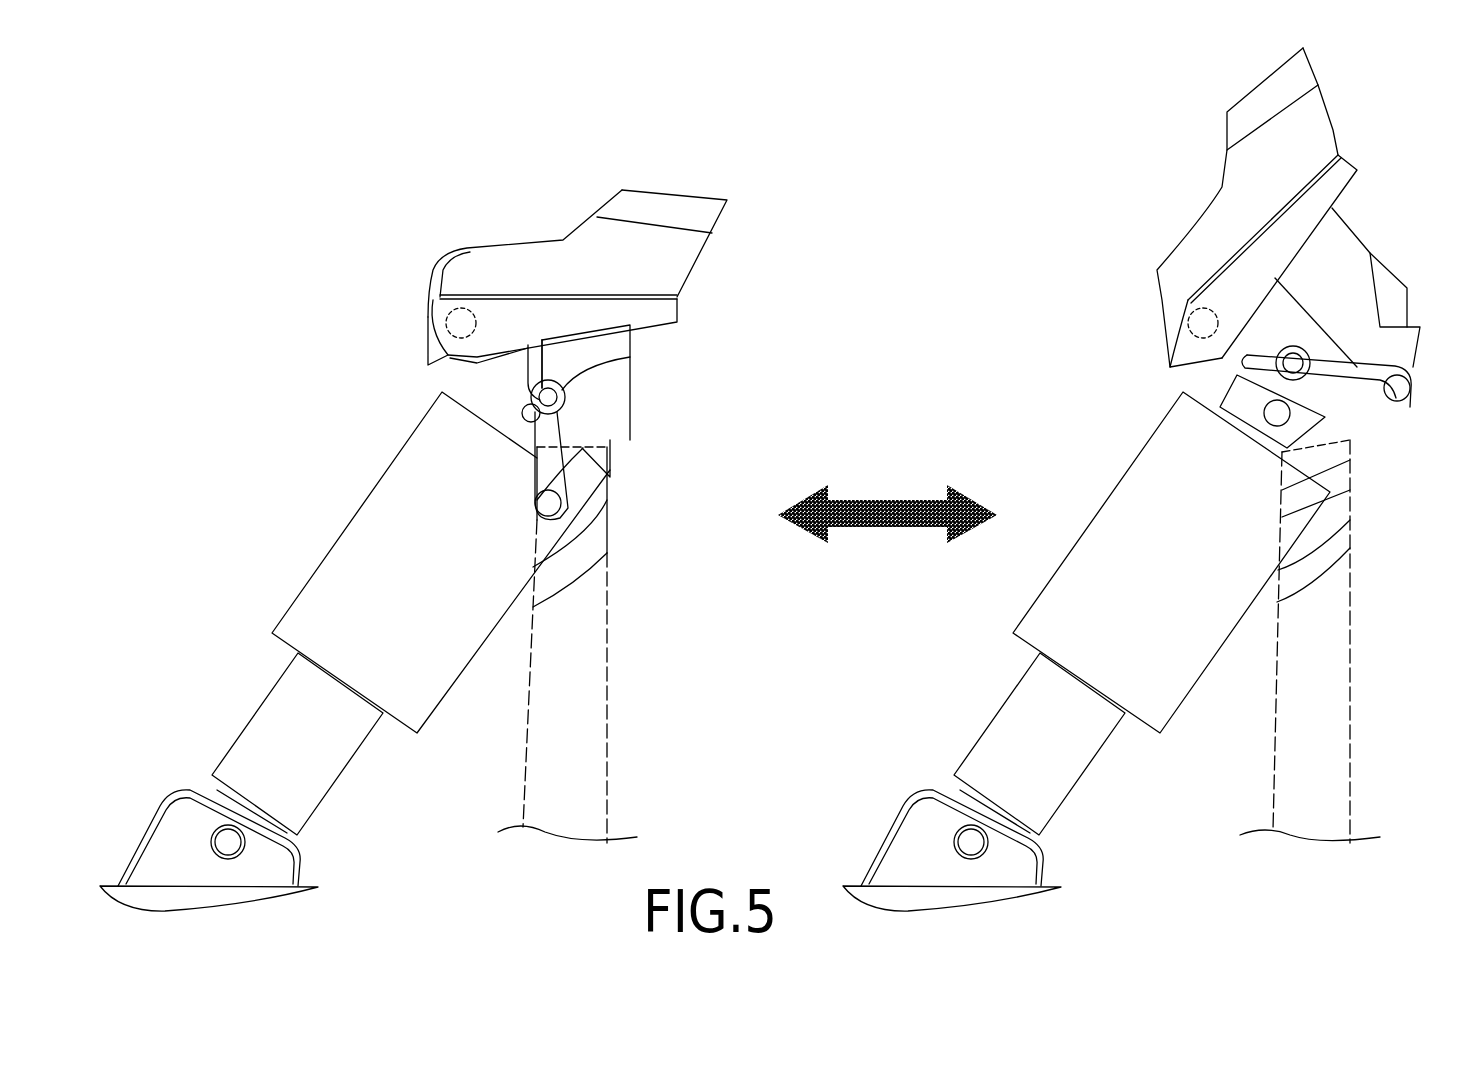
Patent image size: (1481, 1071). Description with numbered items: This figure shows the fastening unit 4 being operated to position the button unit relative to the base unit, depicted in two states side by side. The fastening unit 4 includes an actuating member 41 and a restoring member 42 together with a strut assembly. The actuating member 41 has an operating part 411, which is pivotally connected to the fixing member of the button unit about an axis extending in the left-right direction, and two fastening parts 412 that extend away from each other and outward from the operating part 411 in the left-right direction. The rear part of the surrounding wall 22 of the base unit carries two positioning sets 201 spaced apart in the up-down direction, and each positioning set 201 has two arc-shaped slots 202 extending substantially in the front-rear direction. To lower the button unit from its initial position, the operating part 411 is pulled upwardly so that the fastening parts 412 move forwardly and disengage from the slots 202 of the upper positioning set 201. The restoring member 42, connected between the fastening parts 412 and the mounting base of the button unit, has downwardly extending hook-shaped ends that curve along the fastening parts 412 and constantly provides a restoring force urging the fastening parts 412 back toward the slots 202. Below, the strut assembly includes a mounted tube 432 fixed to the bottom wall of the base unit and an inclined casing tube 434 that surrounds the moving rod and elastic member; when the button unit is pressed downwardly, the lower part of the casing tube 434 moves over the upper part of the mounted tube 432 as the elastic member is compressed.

The fastening unit 4 is at (786, 479).
The actuating member 41 is at (698, 260).
The operating part 411 is at (702, 210).
The restoring member 42 is at (560, 390).
The fastening parts 412 is at (540, 503).
The slots 202 is at (625, 445).
The positioning sets 201 is at (608, 557).
The surrounding wall 22 is at (598, 740).
The mounted tube 432 is at (255, 730).
The casing tube 434 is at (432, 690).